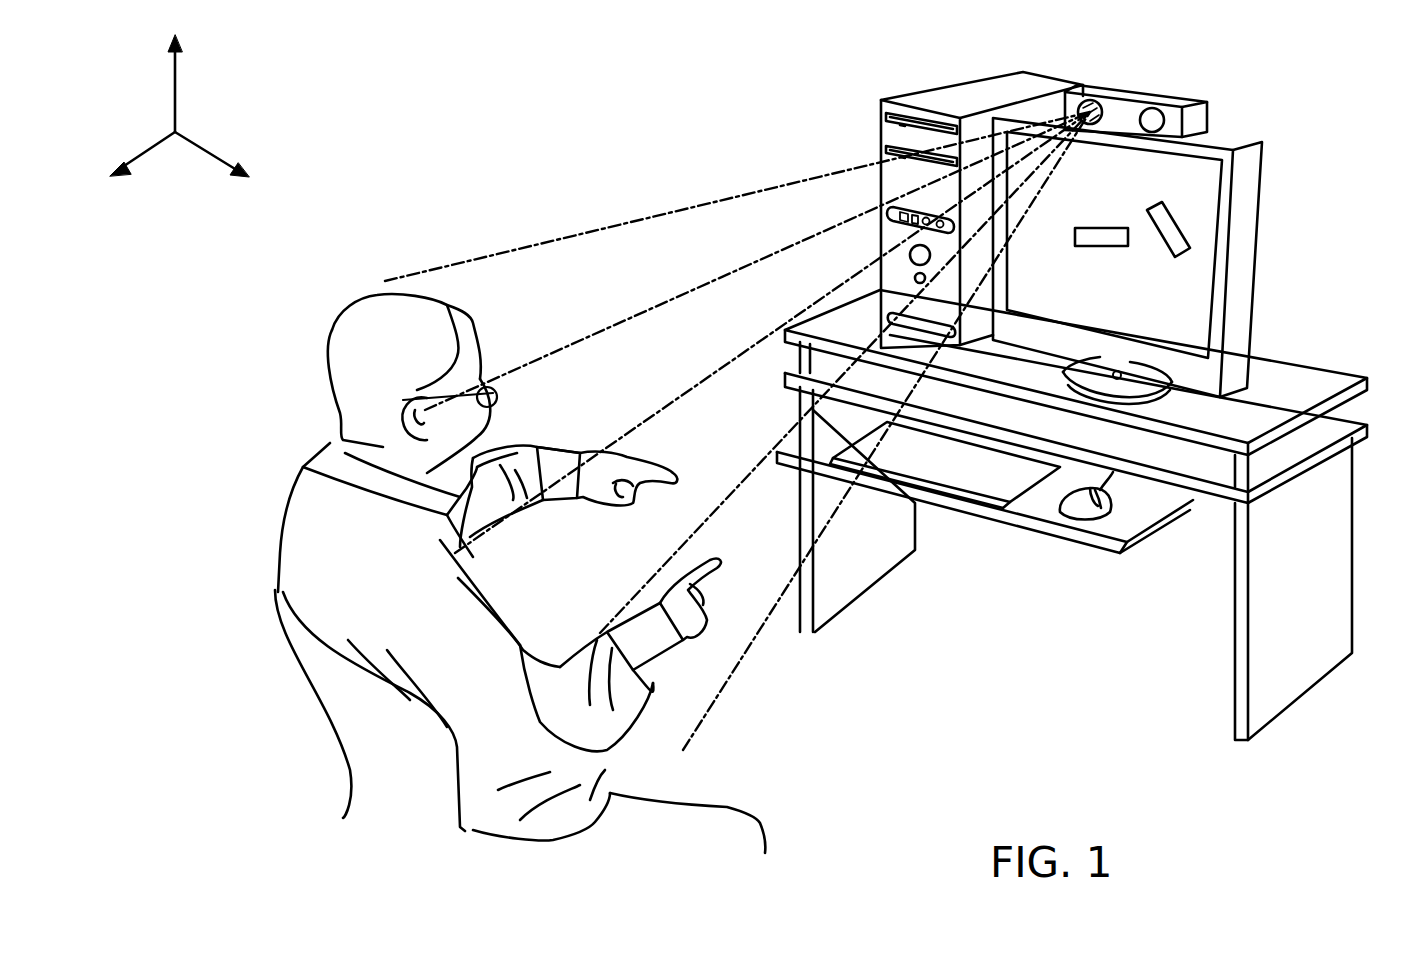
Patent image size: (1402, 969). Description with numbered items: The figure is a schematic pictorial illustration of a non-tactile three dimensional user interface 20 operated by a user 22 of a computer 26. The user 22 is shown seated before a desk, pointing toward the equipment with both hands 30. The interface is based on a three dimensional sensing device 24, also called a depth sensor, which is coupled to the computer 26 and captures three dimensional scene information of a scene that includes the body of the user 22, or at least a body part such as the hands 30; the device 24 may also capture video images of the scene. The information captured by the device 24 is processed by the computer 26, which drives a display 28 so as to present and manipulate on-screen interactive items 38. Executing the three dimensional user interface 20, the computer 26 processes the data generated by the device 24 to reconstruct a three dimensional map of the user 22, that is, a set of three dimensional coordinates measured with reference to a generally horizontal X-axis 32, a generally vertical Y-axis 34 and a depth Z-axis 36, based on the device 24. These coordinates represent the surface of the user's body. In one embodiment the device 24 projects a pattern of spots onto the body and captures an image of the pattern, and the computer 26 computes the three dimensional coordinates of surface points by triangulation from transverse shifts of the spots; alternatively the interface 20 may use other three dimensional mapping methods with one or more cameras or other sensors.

The 3D user interface 20 is at (455, 192).
The user 22 is at (332, 340).
The 3D sensing device 24 is at (1208, 107).
The computer 26 is at (945, 95).
The display 28 is at (1262, 250).
The hands 30 is at (625, 508).
The X-axis 32 is at (215, 163).
The Y-axis 34 is at (175, 85).
The Z-axis 36 is at (128, 168).
The on-screen interactive items 38 is at (1100, 250).